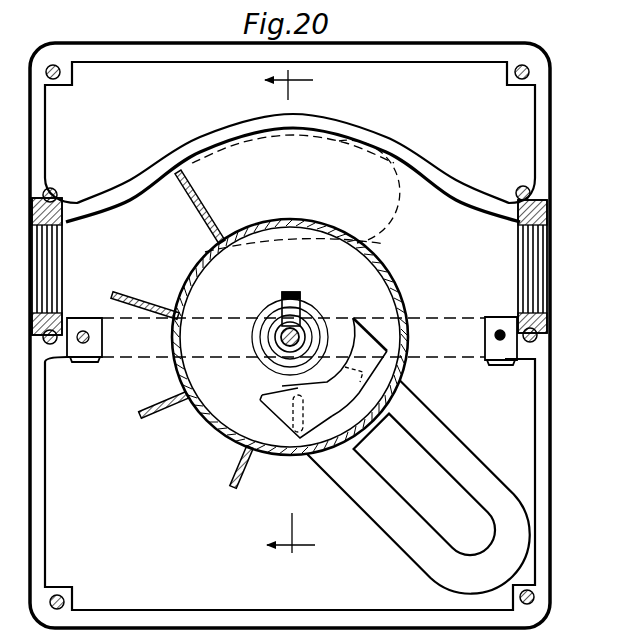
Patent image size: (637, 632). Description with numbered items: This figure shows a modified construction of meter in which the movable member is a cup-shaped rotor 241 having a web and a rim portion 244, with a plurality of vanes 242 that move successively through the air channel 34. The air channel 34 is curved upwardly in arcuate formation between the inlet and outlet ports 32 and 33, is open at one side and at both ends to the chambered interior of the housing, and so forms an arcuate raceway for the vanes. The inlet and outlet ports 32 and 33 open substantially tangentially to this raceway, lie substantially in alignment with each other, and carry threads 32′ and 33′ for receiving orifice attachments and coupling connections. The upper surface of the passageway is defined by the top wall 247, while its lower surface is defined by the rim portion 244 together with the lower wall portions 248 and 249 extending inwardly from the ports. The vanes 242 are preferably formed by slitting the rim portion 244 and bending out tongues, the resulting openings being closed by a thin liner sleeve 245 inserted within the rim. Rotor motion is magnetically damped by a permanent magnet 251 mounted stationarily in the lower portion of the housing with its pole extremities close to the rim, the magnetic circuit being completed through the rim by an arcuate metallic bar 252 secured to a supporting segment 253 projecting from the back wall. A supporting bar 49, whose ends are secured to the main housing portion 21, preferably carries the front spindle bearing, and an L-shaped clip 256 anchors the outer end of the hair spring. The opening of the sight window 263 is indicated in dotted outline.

The main housing portion 21 is at (294, 324).
The inlet port 32 is at (63, 263).
The threads of inlet port 32′ is at (36, 216).
The outlet port 33 is at (518, 268).
The threads of outlet port 33′ is at (537, 236).
The air channel 34 is at (343, 170).
The supporting bar 49 is at (218, 318).
The rotor 241 is at (233, 203).
The vanes 242 is at (196, 205).
The rim portion 244 is at (378, 260).
The liner sleeve 245 is at (295, 253).
The top wall 247 is at (237, 125).
The lower wall portion 248 is at (77, 318).
The lower wall portion 249 is at (505, 318).
The permanent magnet 251 is at (422, 410).
The arcuate metallic bar 252 is at (397, 378).
The supporting segment 253 is at (282, 386).
The L-shaped clip 256 is at (299, 300).
The sight window 263 is at (395, 219).